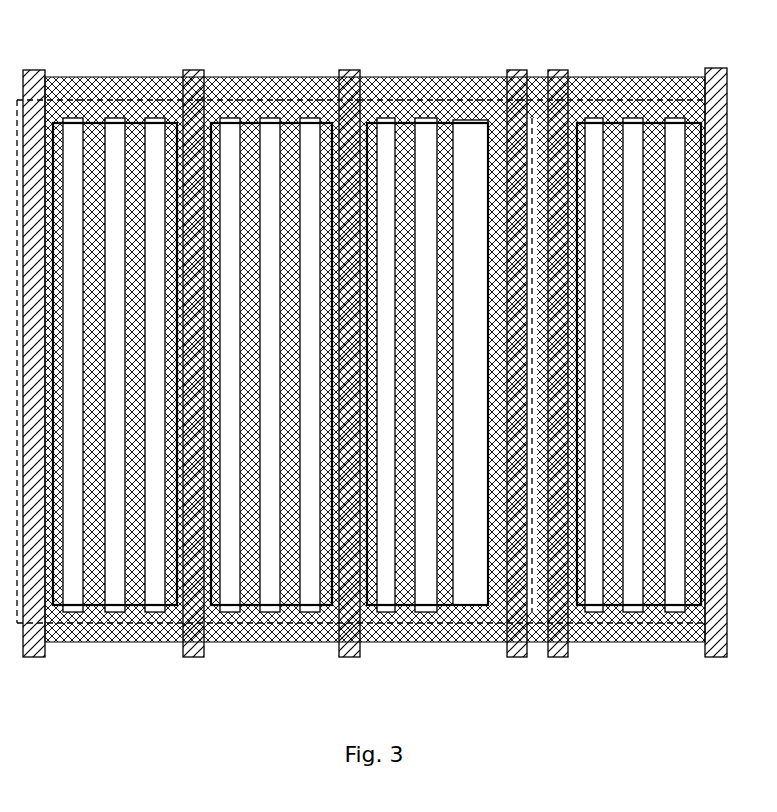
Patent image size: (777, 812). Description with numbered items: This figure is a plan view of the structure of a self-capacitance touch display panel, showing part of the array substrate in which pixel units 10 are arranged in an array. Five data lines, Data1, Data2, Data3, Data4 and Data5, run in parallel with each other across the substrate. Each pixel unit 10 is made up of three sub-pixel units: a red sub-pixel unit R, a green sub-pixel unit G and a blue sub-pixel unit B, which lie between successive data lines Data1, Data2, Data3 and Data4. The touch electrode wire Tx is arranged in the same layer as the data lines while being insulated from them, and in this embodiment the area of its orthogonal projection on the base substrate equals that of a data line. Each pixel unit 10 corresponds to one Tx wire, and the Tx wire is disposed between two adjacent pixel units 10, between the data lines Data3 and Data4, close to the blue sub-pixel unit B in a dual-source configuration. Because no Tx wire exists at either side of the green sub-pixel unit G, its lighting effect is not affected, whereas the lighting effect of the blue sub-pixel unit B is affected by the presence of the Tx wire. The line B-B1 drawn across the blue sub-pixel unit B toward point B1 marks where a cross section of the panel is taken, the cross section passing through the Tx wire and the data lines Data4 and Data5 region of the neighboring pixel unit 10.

The pixel unit 10 is at (78, 100).
The red sub-pixel unit R is at (115, 397).
The green sub-pixel unit G is at (271, 397).
The blue sub-pixel unit B is at (427, 397).
The section line end point B1 is at (621, 373).
The first data line Data1 is at (37, 350).
The second data line Data2 is at (192, 350).
The third data line Data3 is at (347, 350).
The touch electrode wire Tx is at (520, 350).
The fourth data line Data4 is at (567, 350).
The fifth data line Data5 is at (711, 350).